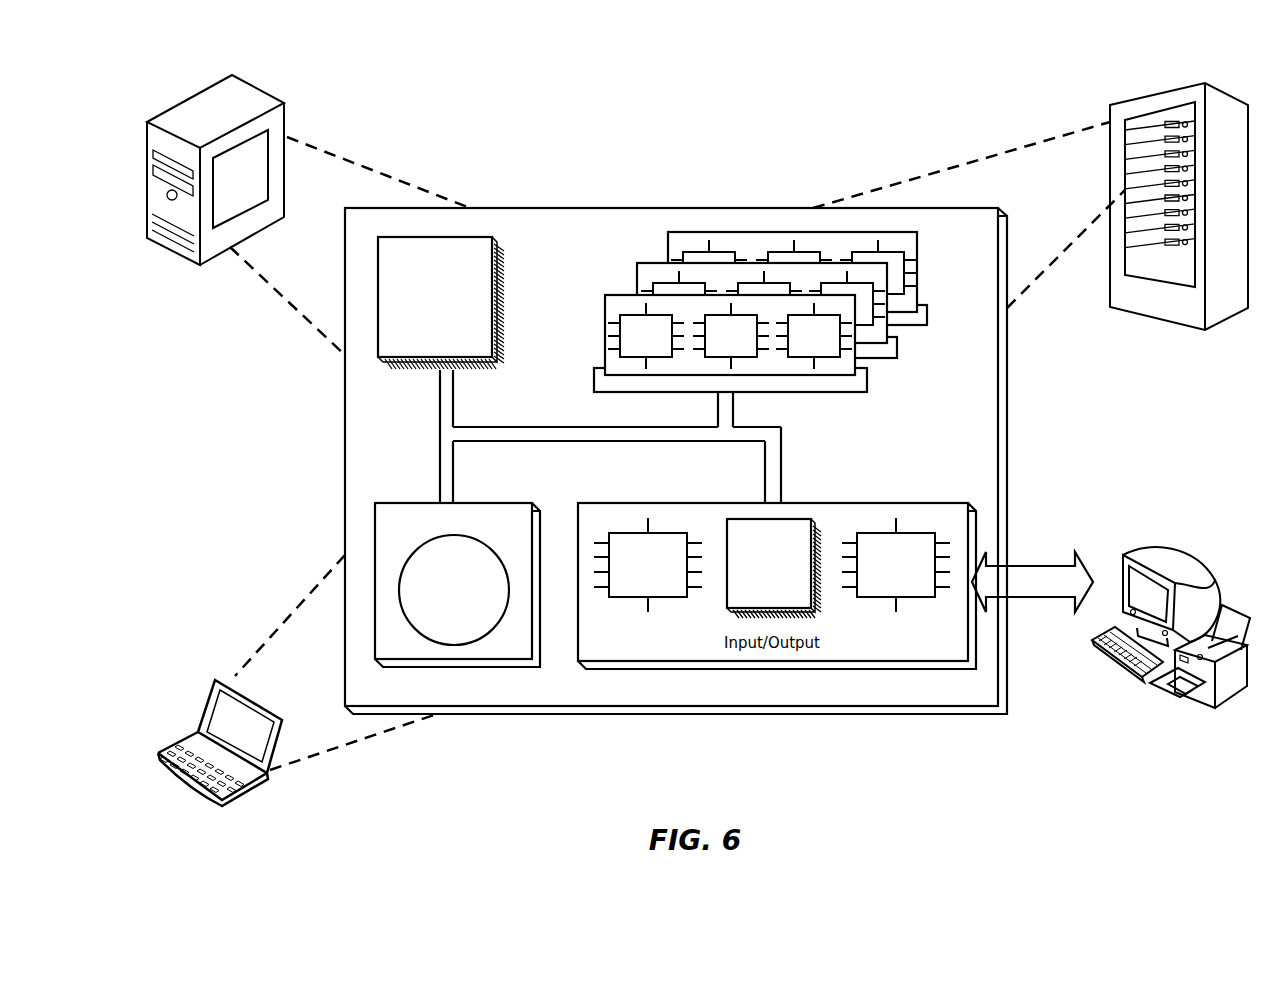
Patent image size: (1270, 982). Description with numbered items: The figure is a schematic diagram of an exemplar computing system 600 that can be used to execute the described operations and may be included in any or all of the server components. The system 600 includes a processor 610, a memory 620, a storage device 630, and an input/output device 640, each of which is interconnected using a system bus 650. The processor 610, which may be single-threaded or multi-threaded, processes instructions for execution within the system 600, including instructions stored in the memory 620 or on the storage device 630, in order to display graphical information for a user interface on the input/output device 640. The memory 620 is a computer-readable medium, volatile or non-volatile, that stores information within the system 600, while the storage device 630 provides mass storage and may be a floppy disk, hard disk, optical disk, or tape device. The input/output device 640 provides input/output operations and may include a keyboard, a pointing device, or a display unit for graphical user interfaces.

The computing system 600 is at (513, 99).
The processor 610 is at (487, 352).
The memory 620 is at (920, 357).
The storage device 630 is at (526, 651).
The input/output device 640 is at (1120, 558).
The system bus 650 is at (607, 442).